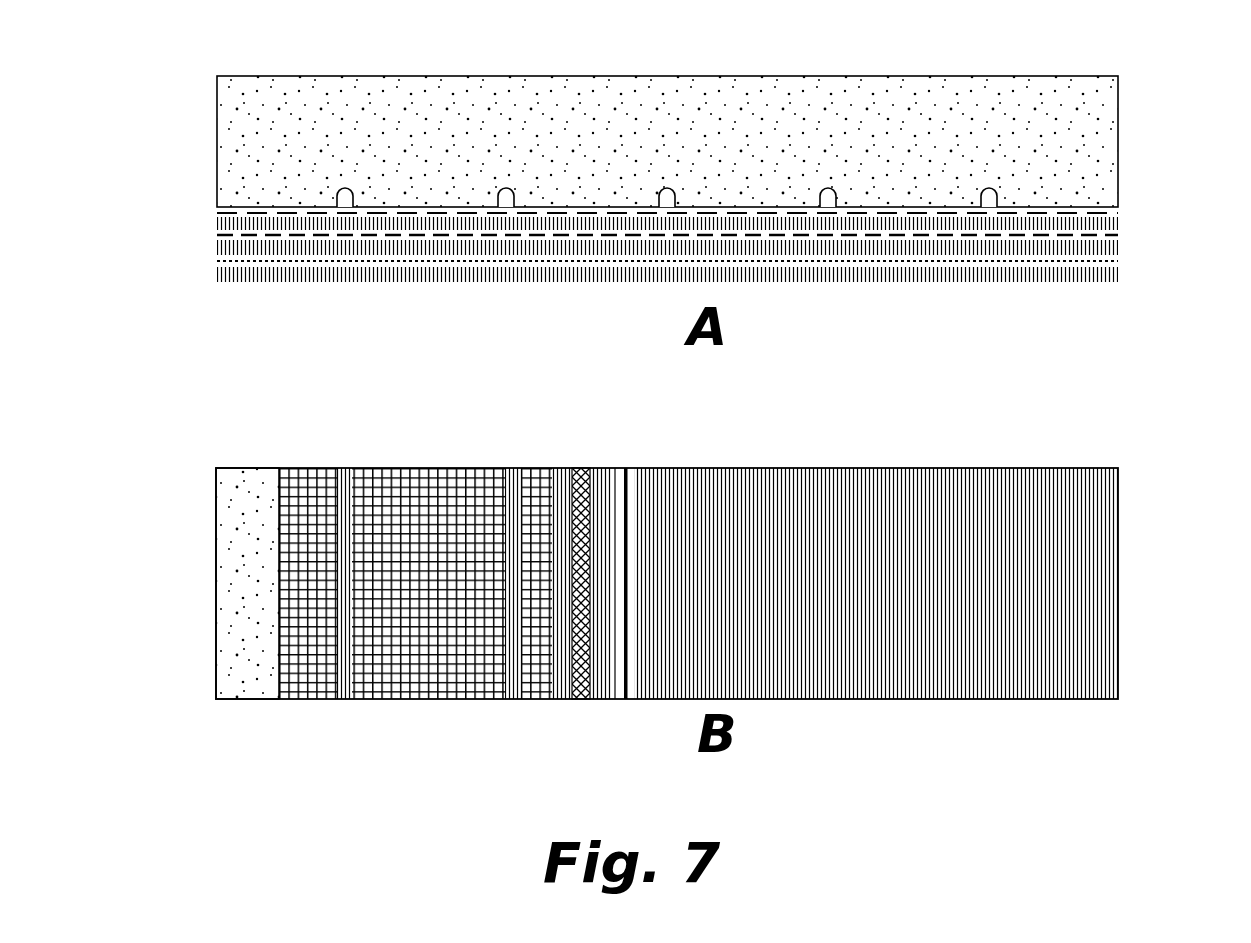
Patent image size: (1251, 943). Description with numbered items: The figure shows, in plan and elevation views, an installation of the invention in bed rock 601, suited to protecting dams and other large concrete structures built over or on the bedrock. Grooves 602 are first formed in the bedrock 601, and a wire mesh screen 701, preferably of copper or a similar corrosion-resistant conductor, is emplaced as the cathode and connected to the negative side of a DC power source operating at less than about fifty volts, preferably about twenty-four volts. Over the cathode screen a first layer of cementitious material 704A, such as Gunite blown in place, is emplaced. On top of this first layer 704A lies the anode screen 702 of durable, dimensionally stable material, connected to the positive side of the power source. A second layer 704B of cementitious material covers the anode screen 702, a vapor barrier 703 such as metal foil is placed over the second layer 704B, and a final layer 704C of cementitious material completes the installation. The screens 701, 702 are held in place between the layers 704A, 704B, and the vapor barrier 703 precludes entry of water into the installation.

The bed rock 601 is at (295, 76).
The grooves 602 is at (505, 188).
The wire mesh screen 701 is at (217, 206).
The anode screen 702 is at (217, 236).
The vapor barrier 703 is at (217, 260).
The first layer of cementitious material 704A is at (1119, 214).
The second layer of cementitious material 704B is at (1119, 250).
The final layer of cementitious material 704C is at (1119, 279).